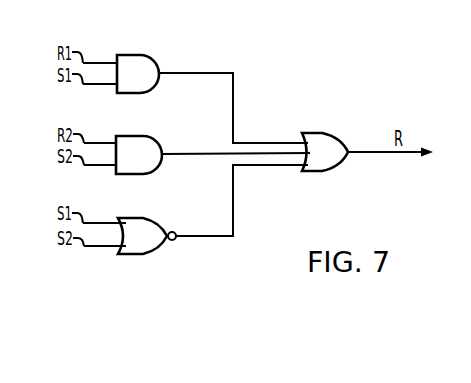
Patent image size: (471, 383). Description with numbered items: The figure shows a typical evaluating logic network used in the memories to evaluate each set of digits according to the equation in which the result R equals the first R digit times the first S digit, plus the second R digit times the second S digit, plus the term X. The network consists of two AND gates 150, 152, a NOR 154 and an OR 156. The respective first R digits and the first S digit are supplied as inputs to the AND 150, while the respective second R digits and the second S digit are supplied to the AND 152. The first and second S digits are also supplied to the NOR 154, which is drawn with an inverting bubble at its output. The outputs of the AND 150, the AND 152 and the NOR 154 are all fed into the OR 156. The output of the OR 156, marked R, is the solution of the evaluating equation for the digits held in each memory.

The AND 150 is at (136, 61).
The AND 152 is at (140, 143).
The NOR 154 is at (154, 230).
The OR 156 is at (329, 144).